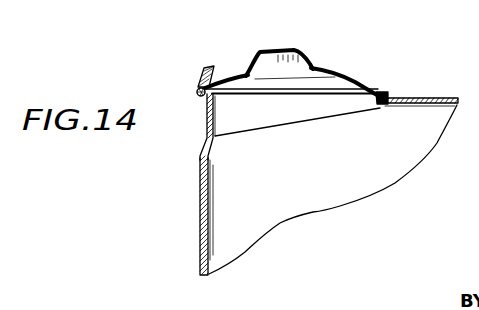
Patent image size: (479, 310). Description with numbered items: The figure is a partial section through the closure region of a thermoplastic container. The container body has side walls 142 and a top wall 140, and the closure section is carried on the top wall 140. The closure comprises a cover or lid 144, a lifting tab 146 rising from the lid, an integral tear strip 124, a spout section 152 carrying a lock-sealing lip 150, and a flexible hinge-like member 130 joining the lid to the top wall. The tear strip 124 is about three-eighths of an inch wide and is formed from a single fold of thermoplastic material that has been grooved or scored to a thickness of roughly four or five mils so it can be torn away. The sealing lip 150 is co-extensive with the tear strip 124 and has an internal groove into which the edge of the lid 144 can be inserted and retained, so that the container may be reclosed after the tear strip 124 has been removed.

The tear strip 124 is at (206, 67).
The flexible hinge-like member 130 is at (381, 105).
The top wall 140 is at (419, 97).
The side walls 142 is at (200, 200).
The cover or lid 144 is at (332, 73).
The lifting tab 146 is at (290, 51).
The lock-sealing lip 150 is at (196, 91).
The spout section 152 is at (206, 117).